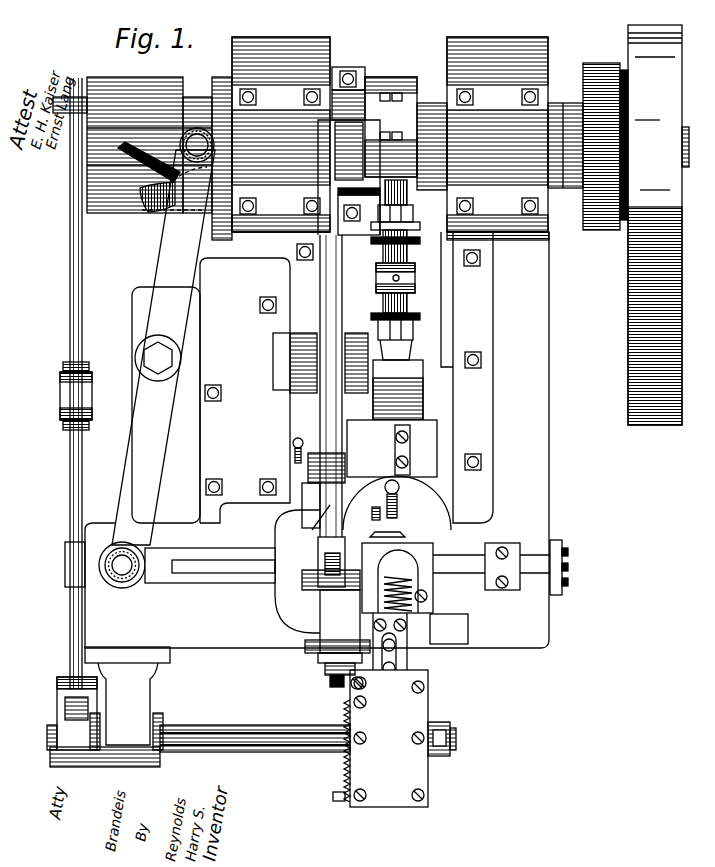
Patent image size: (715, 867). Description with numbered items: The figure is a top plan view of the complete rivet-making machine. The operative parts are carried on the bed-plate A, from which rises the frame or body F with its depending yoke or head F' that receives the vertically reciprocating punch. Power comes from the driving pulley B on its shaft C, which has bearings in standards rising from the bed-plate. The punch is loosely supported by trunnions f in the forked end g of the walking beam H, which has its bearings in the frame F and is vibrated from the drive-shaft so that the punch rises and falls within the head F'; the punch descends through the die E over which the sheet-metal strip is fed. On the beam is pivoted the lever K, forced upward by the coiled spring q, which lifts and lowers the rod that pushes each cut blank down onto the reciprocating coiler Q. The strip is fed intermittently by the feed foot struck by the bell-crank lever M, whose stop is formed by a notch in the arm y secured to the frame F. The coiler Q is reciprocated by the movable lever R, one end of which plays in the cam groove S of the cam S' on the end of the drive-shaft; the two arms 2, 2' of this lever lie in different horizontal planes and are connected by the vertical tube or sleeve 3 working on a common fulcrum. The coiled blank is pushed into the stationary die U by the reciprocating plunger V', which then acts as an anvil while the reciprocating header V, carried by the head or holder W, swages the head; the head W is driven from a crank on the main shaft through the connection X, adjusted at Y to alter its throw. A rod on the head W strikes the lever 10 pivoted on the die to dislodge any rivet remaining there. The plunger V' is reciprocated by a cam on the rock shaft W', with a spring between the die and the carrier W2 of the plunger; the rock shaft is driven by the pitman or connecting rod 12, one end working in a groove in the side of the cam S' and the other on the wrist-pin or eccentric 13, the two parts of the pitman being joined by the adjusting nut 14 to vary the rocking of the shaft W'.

The cam S' is at (142, 158).
The cam groove S is at (231, 432).
The movable lever R is at (165, 255).
The arm of lever 2 is at (163, 336).
The arm of lever 2' is at (145, 432).
The vertical tube or sleeve 3 is at (158, 358).
The bed-plate A is at (307, 488).
The die E is at (275, 353).
The beam H is at (320, 411).
The frame or body F is at (258, 432).
The depending yoke or head F' is at (295, 505).
The lever K is at (330, 503).
The bifurcated or forked end g is at (312, 530).
The coiled spring q is at (400, 500).
The reciprocating header V is at (374, 516).
The lever 10 is at (390, 536).
The reciprocating coiler Q is at (245, 568).
The trunnions f is at (300, 576).
The stationary die U is at (398, 568).
The bell-crank lever M is at (360, 612).
The reciprocating head or holder W is at (392, 418).
The reciprocating plunger V' is at (434, 598).
The arm y is at (466, 578).
The carrier of the plunger W2 is at (408, 632).
The rock shaft W' is at (251, 731).
The wrist-pin or eccentric 13 is at (103, 722).
The adjusting nut 14 is at (62, 412).
The pitman or connecting rod 12 is at (118, 525).
The connection X is at (398, 212).
The adjustment of connection Y is at (415, 279).
The driving pulley B is at (655, 225).
The shaft C is at (696, 148).